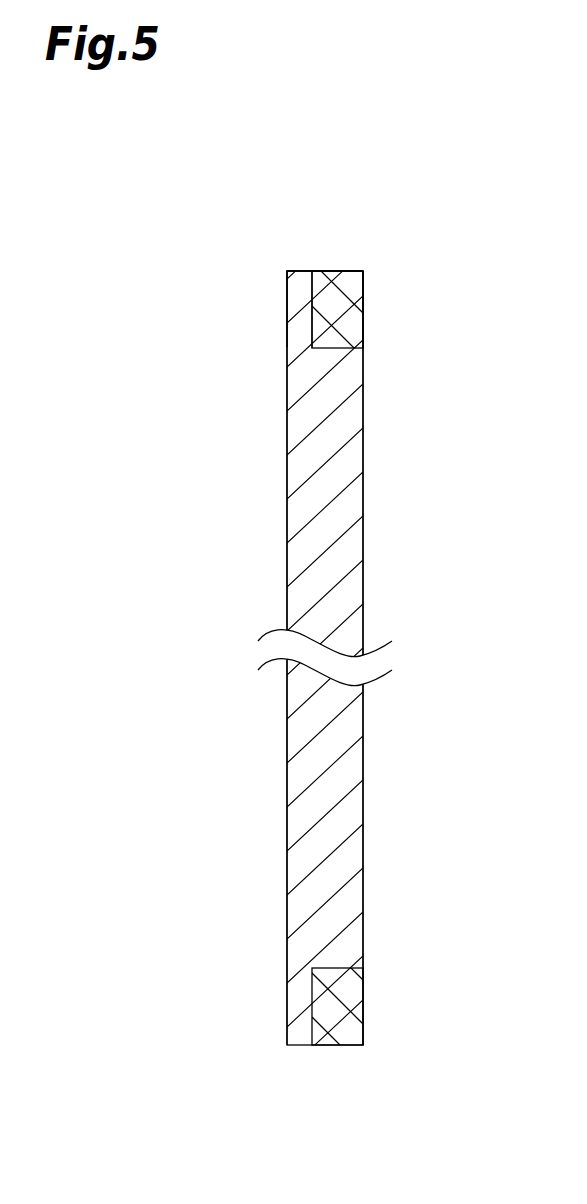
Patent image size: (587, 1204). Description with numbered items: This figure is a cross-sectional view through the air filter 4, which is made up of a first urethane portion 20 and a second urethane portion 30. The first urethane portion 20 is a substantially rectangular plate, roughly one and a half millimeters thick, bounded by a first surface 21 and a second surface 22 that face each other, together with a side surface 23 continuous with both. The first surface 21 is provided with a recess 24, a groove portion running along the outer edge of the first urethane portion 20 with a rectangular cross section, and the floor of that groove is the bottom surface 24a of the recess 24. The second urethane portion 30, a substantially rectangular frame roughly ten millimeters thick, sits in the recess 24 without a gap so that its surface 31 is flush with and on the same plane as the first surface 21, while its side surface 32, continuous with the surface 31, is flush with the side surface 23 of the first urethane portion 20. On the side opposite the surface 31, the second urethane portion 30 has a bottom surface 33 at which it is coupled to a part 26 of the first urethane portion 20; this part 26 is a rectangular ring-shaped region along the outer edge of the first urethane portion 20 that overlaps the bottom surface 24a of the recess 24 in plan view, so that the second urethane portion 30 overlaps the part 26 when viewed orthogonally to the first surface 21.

The air filter 4 is at (363, 797).
The first urethane portion 20 is at (348, 538).
The first surface 21 is at (365, 445).
The second surface 22 is at (287, 452).
The side surface 23 is at (302, 271).
The recess 24 is at (325, 255).
The bottom surface of the recess 24a is at (325, 255).
The part of the first urethane portion 26 is at (300, 290).
The second urethane portion 30 is at (352, 290).
The surface of the second urethane portion 31 is at (363, 313).
The side surface of the second urethane portion 32 is at (350, 271).
The bottom surface of the second urethane portion 33 is at (310, 323).